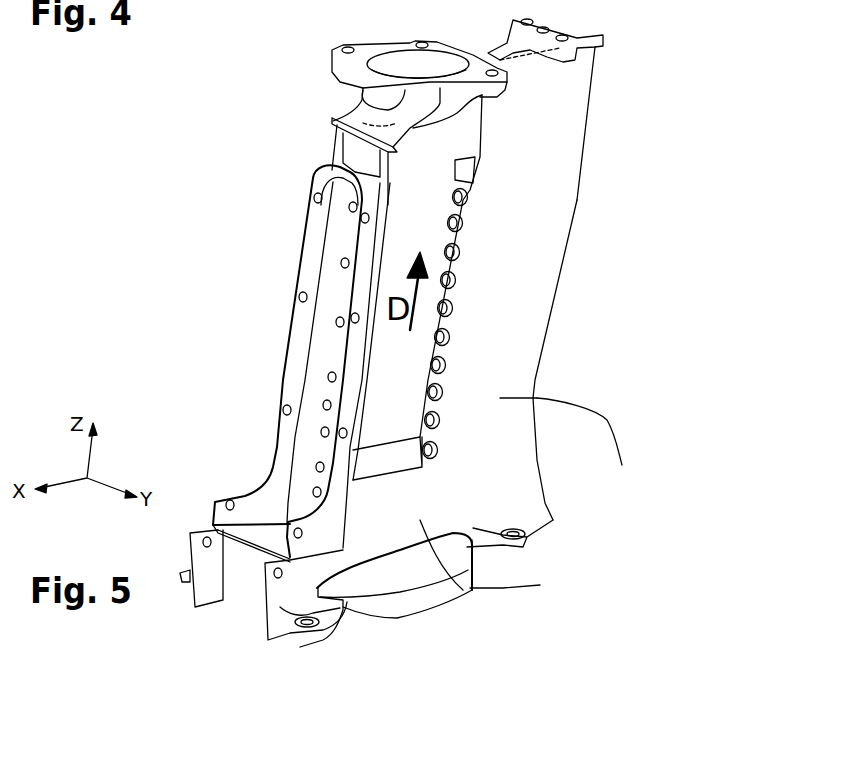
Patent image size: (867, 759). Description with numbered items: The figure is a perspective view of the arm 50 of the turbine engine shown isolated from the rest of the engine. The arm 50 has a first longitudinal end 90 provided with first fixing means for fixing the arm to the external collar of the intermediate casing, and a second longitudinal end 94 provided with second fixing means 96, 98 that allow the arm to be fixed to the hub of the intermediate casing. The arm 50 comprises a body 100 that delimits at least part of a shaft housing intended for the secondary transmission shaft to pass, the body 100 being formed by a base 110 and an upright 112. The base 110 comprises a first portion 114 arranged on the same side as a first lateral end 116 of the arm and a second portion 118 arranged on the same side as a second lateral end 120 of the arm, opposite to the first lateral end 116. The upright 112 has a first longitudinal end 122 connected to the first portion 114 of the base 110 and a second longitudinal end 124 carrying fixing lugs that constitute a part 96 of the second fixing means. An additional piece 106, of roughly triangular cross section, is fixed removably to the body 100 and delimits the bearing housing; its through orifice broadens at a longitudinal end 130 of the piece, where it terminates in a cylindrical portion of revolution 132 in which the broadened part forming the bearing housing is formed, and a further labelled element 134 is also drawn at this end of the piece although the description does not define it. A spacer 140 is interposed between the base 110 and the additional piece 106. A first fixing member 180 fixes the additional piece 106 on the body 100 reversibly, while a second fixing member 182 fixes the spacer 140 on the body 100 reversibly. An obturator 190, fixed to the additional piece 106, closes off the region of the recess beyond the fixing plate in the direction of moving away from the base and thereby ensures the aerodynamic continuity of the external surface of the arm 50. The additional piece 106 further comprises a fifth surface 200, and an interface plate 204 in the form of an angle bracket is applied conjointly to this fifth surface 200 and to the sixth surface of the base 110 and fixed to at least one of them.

The arm 50 is at (199, 234).
The first longitudinal end 90 is at (390, 618).
The second longitudinal end 94 is at (497, 50).
The second fixing means (fixing lugs) 96 is at (527, 20).
The second fixing means 98 is at (347, 47).
The body 100 is at (717, 478).
The additional piece 106 is at (486, 130).
The base 110 is at (658, 508).
The upright 112 is at (622, 465).
The first portion 114 is at (513, 513).
The first lateral end 116 is at (547, 307).
The second portion 118 is at (540, 585).
The second lateral end 120 is at (287, 353).
The first longitudinal end 122 is at (502, 447).
The second longitudinal end 124 is at (573, 73).
The longitudinal end 130 is at (388, 43).
The cylindrical portion of revolution 132 is at (360, 100).
The bore 134 is at (425, 62).
The spacer 140 is at (373, 463).
The first fixing member 180 is at (467, 197).
The second fixing member 182 is at (437, 450).
The obturator 190 is at (470, 165).
The fifth surface 200 is at (328, 135).
The interface plate 204 is at (318, 449).